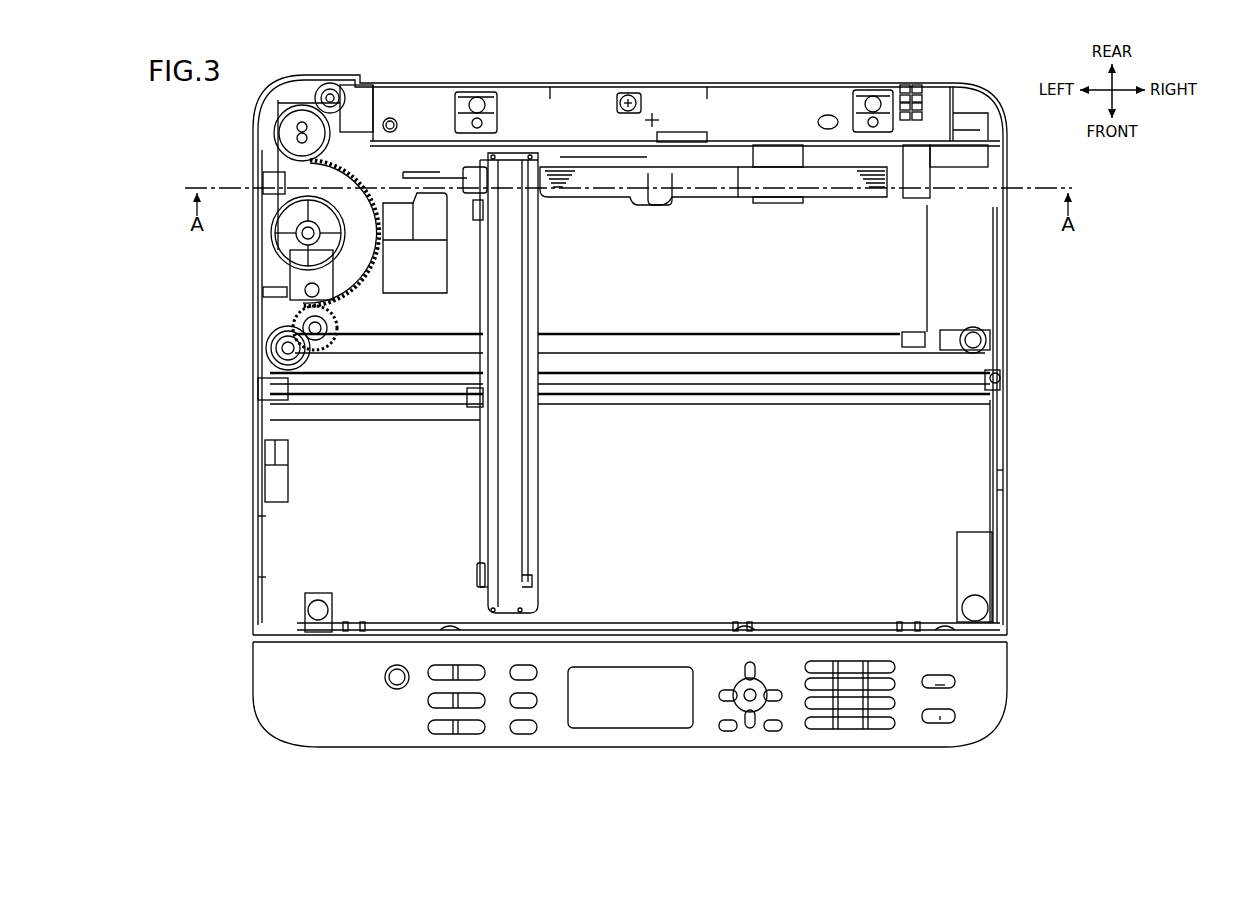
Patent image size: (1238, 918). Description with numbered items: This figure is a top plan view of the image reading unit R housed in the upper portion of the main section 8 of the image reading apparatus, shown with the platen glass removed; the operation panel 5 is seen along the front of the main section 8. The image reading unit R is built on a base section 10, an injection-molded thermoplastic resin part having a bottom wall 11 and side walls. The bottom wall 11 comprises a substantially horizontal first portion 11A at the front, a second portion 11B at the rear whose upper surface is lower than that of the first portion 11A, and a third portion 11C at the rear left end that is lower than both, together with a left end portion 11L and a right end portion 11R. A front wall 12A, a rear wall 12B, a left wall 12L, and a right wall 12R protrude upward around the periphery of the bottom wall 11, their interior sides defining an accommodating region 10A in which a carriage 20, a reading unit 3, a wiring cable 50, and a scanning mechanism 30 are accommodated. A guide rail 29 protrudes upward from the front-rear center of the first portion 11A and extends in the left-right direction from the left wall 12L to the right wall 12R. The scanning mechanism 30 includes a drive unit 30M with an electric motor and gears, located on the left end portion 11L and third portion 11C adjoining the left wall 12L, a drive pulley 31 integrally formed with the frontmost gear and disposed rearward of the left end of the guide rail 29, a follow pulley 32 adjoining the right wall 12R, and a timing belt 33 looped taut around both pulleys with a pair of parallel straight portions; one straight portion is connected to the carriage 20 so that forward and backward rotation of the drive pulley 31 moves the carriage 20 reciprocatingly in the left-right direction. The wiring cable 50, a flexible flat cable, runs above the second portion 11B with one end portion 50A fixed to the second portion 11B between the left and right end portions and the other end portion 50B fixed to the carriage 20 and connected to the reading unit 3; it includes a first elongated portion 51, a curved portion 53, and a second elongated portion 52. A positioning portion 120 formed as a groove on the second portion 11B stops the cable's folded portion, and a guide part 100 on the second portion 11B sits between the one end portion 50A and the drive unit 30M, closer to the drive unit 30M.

The reading unit 3 is at (507, 458).
The operation panel 5 is at (638, 697).
The main section 8 is at (1022, 609).
The base section 10 is at (245, 604).
The accommodating region 10A is at (865, 522).
The bottom wall 11 is at (924, 437).
The first portion 11A is at (890, 266).
The second portion 11B is at (857, 152).
The third portion 11C is at (369, 150).
The left end portion 11L is at (278, 537).
The right end portion 11R is at (983, 485).
The front wall 12A is at (797, 643).
The rear wall 12B is at (530, 131).
The left wall 12L is at (245, 526).
The right wall 12R is at (1020, 469).
The carriage 20 is at (533, 489).
The guide rail 29 is at (743, 387).
The scanning mechanism 30 is at (400, 434).
The drive unit 30M is at (268, 277).
The drive pulley 31 is at (296, 368).
The follow pulley 32 is at (992, 320).
The timing belt 33 is at (750, 322).
The wiring cable 50 is at (829, 156).
The one end portion 50A is at (661, 160).
The other end portion 50B is at (468, 170).
The first elongated portion 51 is at (738, 178).
The second elongated portion 52 is at (594, 177).
The curved portion 53 is at (793, 170).
The guide part 100 is at (424, 160).
The positioning portion 120 is at (667, 195).
The image reading unit R is at (391, 618).